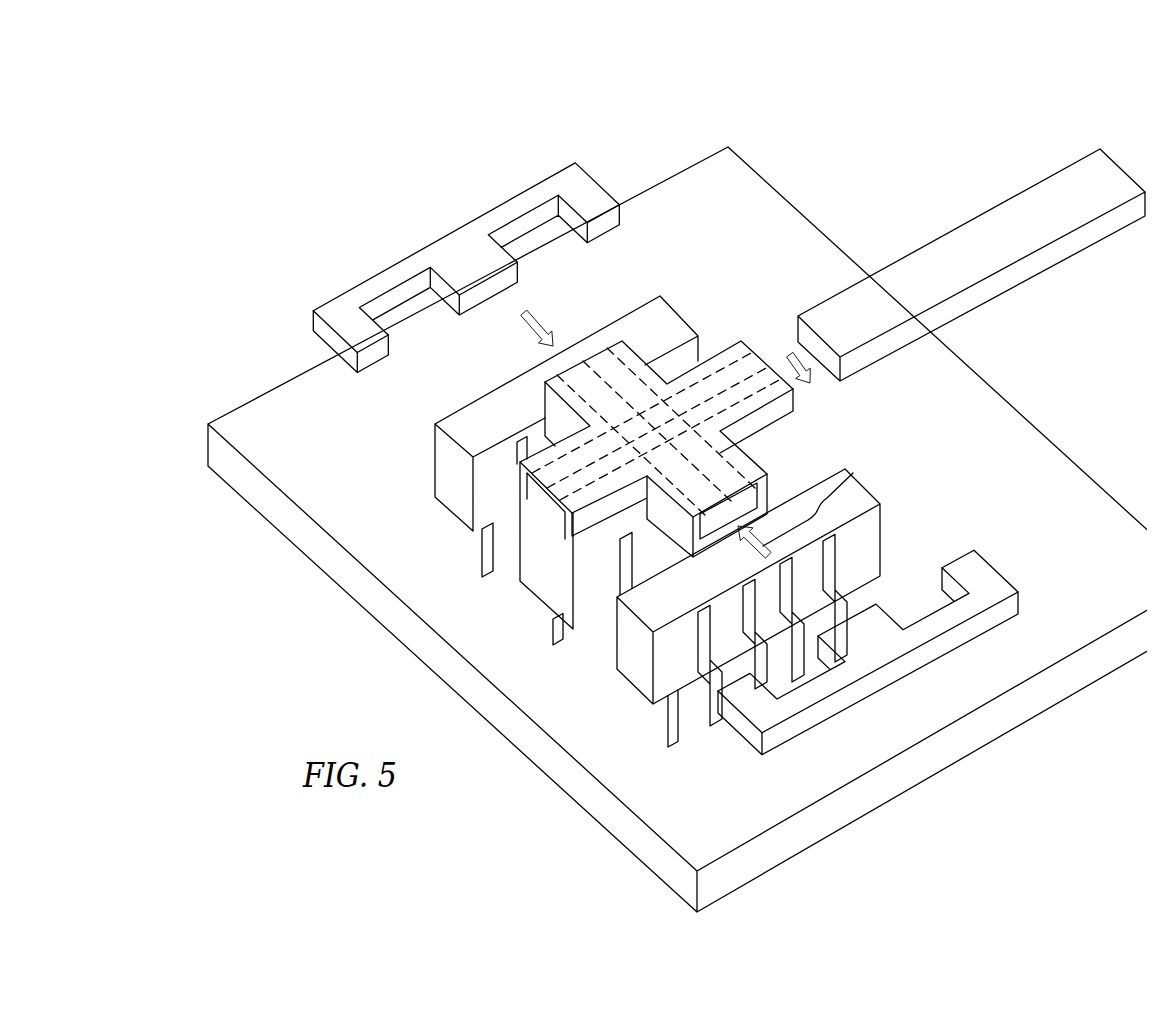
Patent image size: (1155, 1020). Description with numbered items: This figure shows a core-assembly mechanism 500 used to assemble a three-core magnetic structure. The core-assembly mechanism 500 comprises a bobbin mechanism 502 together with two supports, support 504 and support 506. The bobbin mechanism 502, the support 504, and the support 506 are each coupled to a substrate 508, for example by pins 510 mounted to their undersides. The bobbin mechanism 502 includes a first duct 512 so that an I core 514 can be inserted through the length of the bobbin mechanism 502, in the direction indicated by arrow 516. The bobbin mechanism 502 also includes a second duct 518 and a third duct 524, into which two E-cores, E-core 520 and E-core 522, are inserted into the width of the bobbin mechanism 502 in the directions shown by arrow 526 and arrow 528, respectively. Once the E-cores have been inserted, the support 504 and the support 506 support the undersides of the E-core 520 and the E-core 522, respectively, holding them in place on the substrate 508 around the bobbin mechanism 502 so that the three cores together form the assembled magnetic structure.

The core-assembly mechanism 500 is at (925, 57).
The bobbin mechanism 502 is at (740, 342).
The support 504 is at (455, 413).
The support 506 is at (882, 536).
The substrate 508 is at (726, 146).
The pins 510 is at (482, 556).
The first duct 512 is at (553, 521).
The I core 514 is at (1058, 172).
The arrow 516 is at (792, 356).
The second duct 518 is at (776, 494).
The E-core 520 is at (425, 247).
The E-core 522 is at (1002, 586).
The third duct 524 is at (611, 378).
The arrow 526 is at (850, 481).
The arrow 528 is at (533, 323).